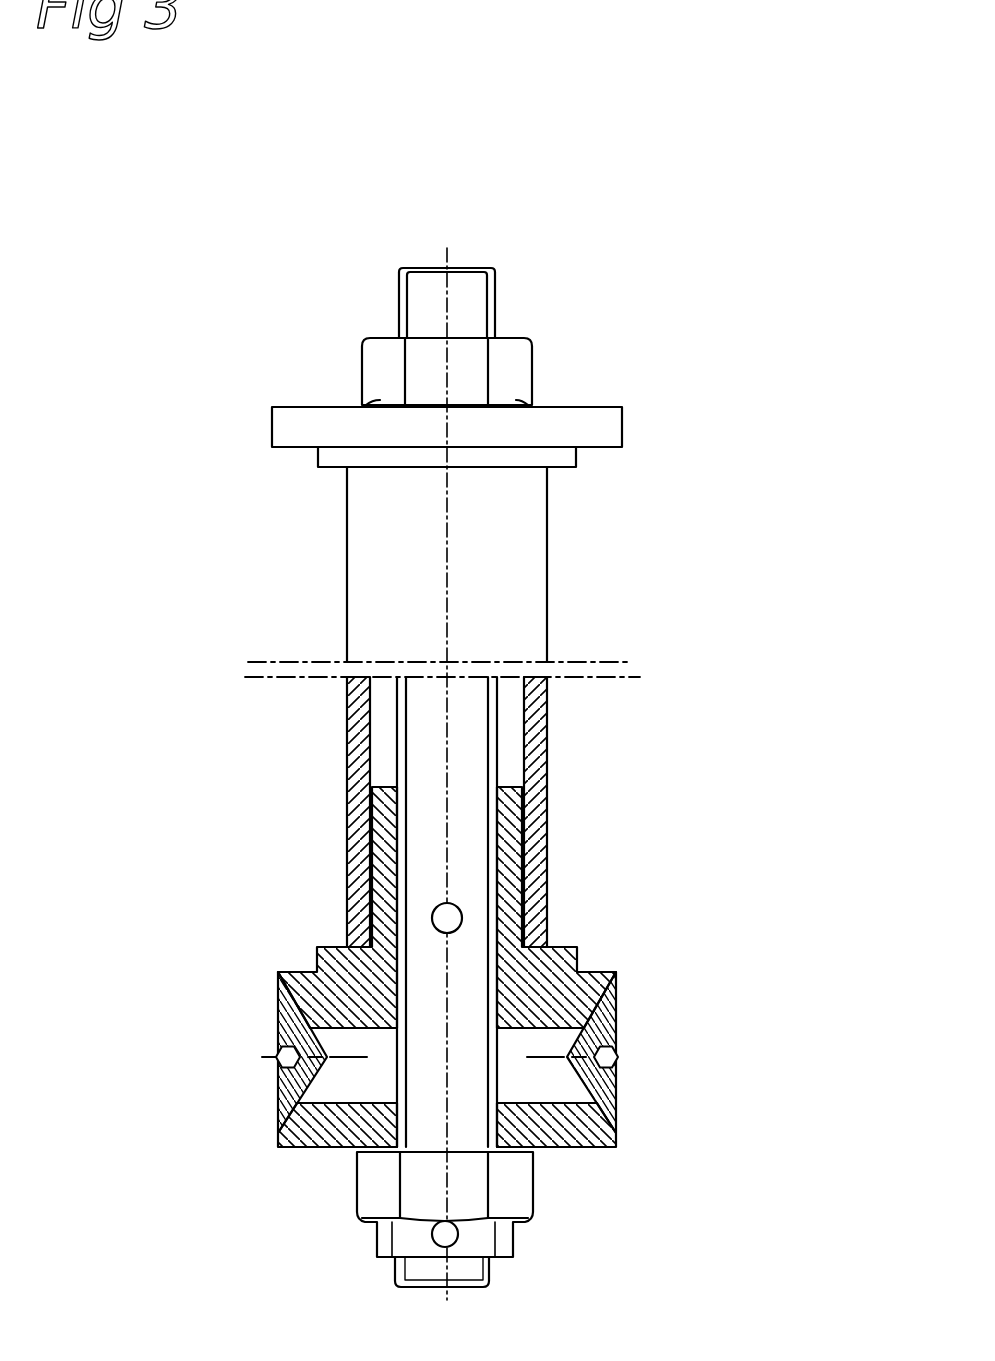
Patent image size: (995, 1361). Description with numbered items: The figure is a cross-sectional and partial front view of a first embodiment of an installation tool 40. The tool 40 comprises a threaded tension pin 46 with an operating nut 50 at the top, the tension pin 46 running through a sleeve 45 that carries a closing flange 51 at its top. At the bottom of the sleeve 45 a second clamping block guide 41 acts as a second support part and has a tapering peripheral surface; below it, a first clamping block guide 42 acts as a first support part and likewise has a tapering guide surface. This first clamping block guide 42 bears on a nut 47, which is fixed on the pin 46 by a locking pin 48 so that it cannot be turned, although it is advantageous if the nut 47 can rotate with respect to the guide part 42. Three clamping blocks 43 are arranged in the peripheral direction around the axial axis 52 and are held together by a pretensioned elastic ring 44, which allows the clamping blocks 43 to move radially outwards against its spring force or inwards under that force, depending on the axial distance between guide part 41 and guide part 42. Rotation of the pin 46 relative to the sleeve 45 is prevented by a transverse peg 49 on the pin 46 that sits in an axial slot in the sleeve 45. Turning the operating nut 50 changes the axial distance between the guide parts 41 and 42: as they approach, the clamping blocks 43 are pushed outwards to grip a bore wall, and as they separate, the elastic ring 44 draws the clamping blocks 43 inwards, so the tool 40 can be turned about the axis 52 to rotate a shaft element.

The tool 40 is at (634, 299).
The second clamping block guide 41 is at (595, 972).
The first clamping block guide 42 is at (590, 1148).
The clamping blocks 43 is at (617, 1026).
The elastic ring 44 is at (618, 1057).
The sleeve 45 is at (385, 544).
The tension pin 46 is at (476, 300).
The nut 47 is at (380, 1185).
The locking pin 48 is at (445, 1240).
The peg 49 is at (434, 909).
The operating nut 50 is at (497, 373).
The closing flange 51 is at (593, 423).
The axial axis 52 is at (447, 258).